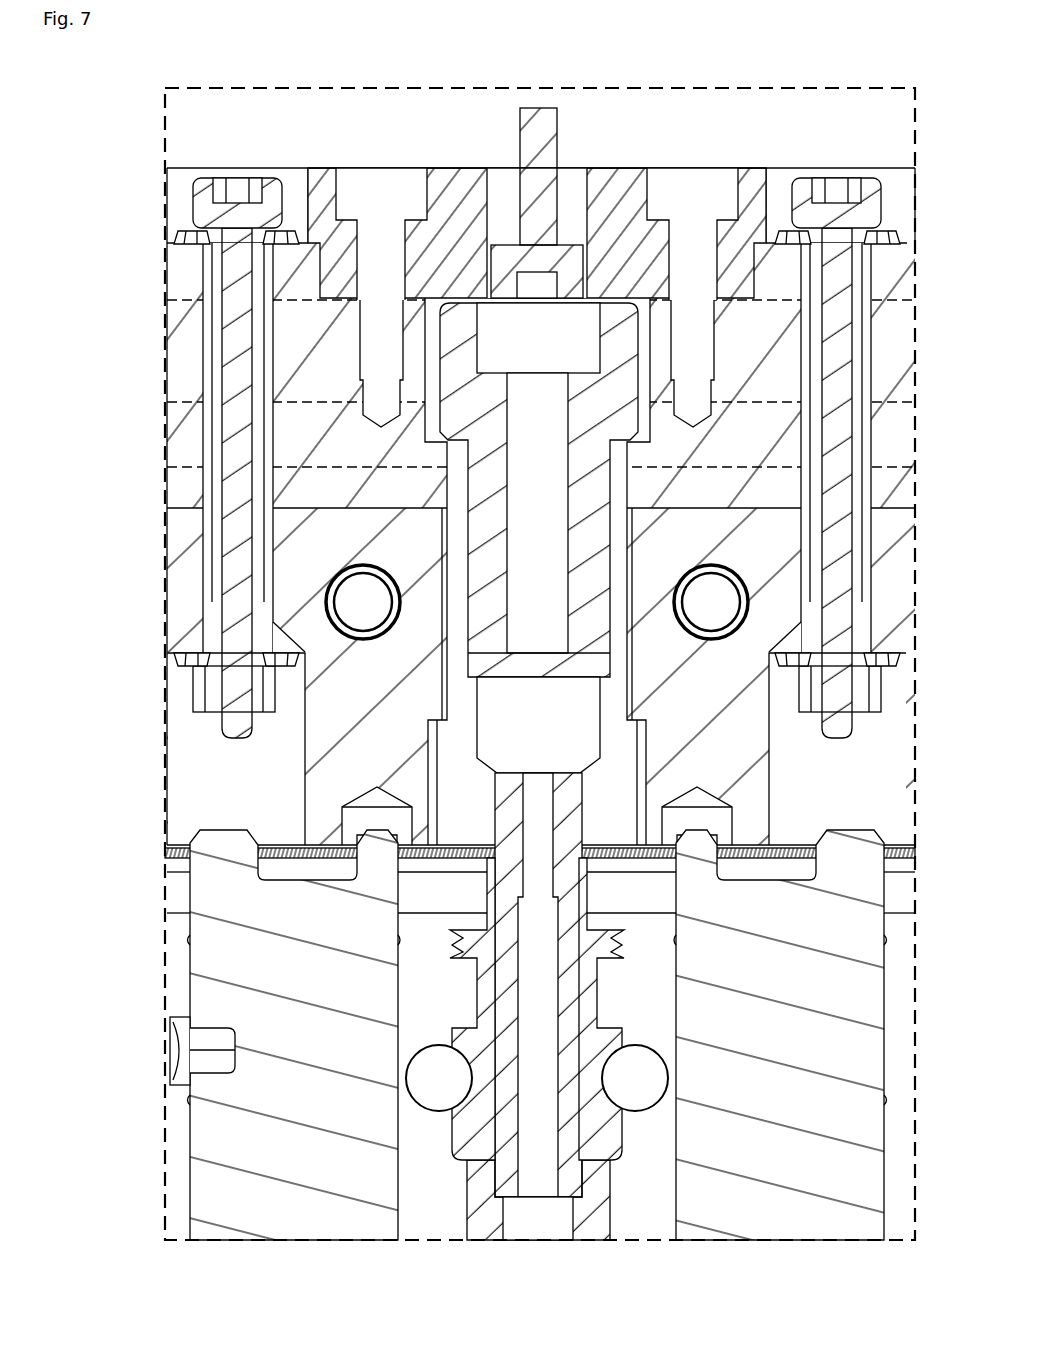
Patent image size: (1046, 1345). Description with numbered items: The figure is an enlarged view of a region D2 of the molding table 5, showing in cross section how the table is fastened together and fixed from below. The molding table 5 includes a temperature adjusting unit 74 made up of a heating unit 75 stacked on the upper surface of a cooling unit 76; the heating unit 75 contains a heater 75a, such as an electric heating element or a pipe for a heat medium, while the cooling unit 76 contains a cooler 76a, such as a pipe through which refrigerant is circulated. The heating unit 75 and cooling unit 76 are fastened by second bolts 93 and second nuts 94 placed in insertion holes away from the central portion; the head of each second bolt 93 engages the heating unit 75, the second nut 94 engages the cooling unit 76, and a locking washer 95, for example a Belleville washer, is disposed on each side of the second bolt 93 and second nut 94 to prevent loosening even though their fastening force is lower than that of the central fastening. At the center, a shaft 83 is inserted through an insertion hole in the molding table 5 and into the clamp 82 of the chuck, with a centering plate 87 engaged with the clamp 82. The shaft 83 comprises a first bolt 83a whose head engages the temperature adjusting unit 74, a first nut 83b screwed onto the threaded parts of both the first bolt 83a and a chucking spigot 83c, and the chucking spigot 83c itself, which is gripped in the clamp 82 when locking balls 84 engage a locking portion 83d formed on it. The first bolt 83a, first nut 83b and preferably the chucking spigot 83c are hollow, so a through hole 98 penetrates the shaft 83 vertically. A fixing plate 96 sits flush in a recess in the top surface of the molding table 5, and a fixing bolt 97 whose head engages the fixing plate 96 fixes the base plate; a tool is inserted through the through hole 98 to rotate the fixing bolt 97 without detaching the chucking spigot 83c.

The molding table 5 is at (184, 141).
The temperature adjusting unit 74 is at (107, 269).
The heating unit 75 is at (496, 375).
The heater 75a is at (741, 301).
The cooling unit 76 is at (496, 506).
The cooler 76a is at (383, 634).
The clamp 82 is at (880, 1010).
The shaft 83 is at (530, 771).
The first bolt 83a is at (594, 375).
The first nut 83b is at (600, 718).
The chucking spigot 83c is at (514, 940).
The locking portion 83d is at (456, 1135).
The locking ball 84 is at (440, 1060).
The centering plate 87 is at (170, 880).
The second bolt 93 is at (213, 183).
The second nut 94 is at (296, 708).
The locking washer 95 is at (296, 222).
The fixing plate 96 is at (541, 201).
The fixing bolt 97 is at (546, 134).
The through hole 98 is at (539, 1218).
The region D2 is at (808, 86).